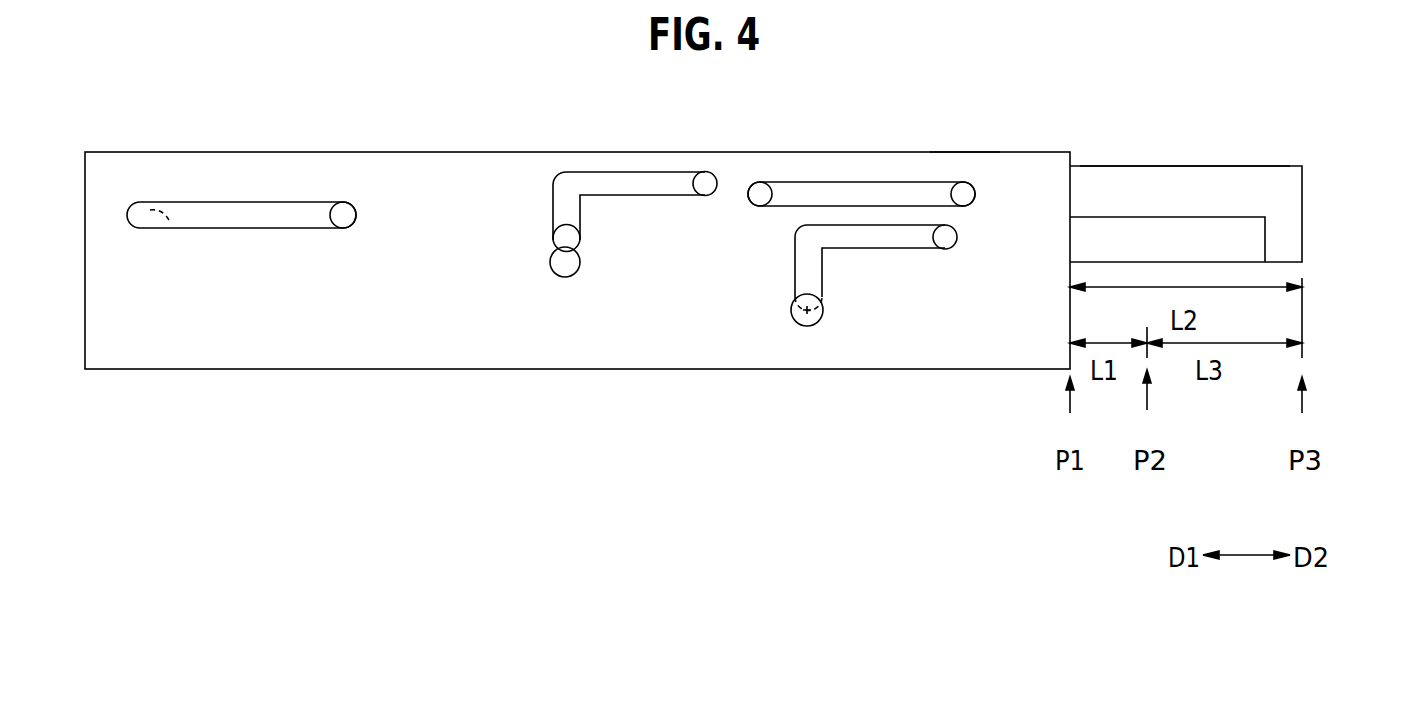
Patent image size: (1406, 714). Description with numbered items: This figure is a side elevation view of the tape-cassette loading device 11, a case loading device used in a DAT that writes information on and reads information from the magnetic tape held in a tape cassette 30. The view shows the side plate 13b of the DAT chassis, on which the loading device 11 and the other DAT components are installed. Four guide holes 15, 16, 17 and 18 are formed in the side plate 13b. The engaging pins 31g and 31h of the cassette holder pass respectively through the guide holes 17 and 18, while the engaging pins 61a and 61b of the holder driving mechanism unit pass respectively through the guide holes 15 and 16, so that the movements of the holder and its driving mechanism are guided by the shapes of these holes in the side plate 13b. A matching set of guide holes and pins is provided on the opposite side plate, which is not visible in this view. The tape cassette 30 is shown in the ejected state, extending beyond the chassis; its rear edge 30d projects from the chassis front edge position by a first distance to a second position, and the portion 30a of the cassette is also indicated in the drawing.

The tape-cassette loading device 11 is at (366, 117).
The guide hole 16 is at (290, 213).
The engaging pin 61b is at (172, 225).
The guide hole 18 is at (613, 177).
The engaging pin 31h is at (705, 183).
The guide hole 15 is at (852, 188).
The engaging pin 61a is at (760, 194).
The side plate 13b is at (968, 167).
The guide hole 17 is at (875, 242).
The engaging pin 31g is at (950, 240).
The tape cassette 30 is at (1263, 178).
The slider top portion 30a is at (1157, 165).
The rear edge 30d is at (1303, 222).